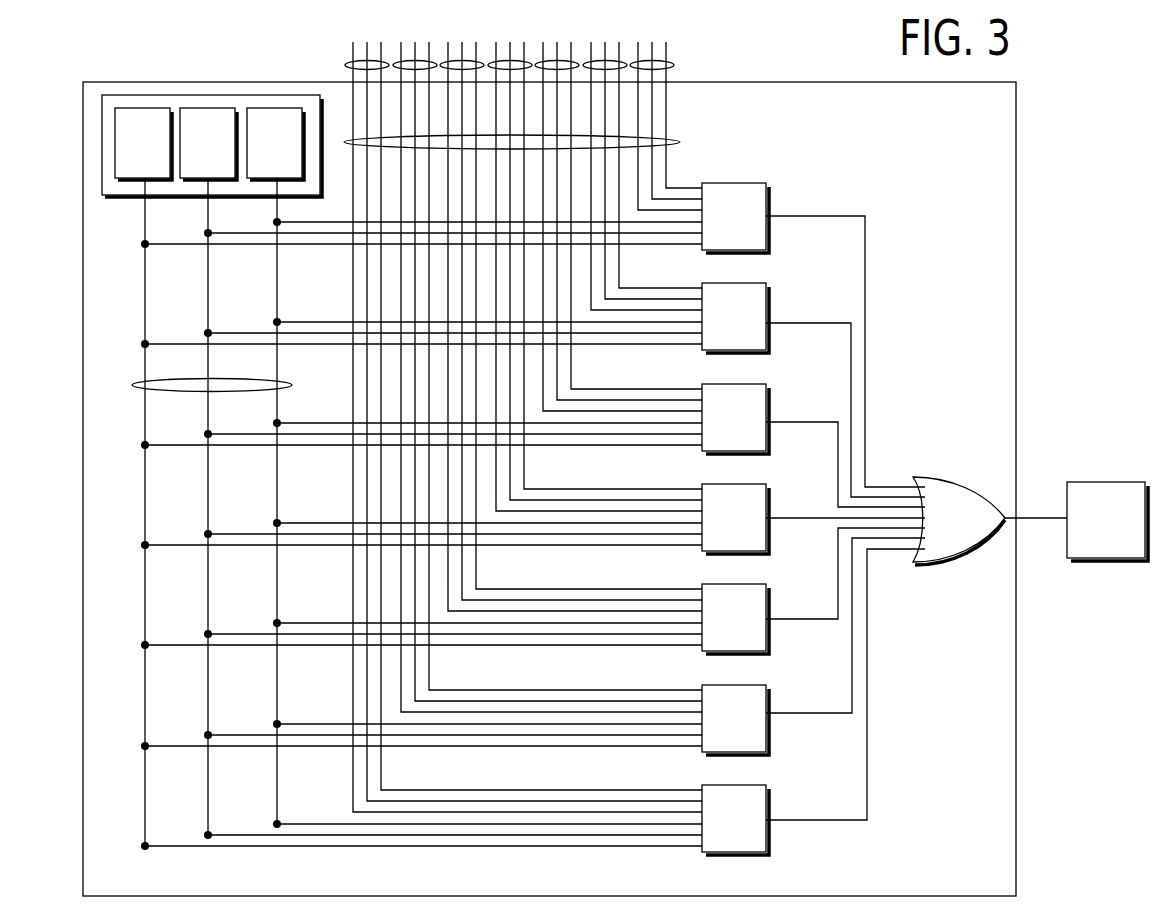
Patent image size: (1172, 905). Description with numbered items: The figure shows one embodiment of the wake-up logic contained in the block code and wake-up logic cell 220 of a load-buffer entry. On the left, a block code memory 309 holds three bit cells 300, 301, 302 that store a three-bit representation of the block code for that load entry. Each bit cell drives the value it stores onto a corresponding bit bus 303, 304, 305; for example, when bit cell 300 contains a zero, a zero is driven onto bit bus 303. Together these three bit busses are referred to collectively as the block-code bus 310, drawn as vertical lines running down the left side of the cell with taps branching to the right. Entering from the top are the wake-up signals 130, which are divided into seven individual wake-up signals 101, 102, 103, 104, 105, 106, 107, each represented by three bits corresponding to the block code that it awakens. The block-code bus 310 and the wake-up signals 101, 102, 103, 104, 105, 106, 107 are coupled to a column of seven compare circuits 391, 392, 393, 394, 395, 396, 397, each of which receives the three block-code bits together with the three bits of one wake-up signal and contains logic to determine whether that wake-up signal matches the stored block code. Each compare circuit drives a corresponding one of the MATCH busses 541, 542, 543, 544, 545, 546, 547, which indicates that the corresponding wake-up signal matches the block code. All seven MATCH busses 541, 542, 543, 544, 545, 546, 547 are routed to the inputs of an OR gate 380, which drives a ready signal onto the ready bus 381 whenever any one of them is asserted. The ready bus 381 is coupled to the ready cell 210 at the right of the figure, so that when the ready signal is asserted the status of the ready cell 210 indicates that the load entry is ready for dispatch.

The wake-up signal 101 is at (668, 67).
The wake-up signal 102 is at (622, 60).
The wake-up signal 103 is at (574, 60).
The wake-up signal 104 is at (526, 60).
The wake-up signal 105 is at (478, 60).
The wake-up signal 106 is at (429, 60).
The wake-up signal 107 is at (381, 60).
The wake-up signals 130 is at (678, 142).
The ready cell 210 is at (1088, 547).
The block code and wake-up logic cell 220 is at (1017, 742).
The bit cell 300 is at (257, 170).
The bit cell 301 is at (190, 170).
The bit cell 302 is at (125, 170).
The bit bus 303 is at (280, 303).
The bit bus 304 is at (210, 303).
The bit bus 305 is at (148, 303).
The block code memory 309 is at (144, 95).
The block-code bus 310 is at (132, 385).
The OR gate 380 is at (941, 531).
The ready bus 381 is at (1049, 522).
The compare circuit 391 is at (717, 231).
The compare circuit 392 is at (717, 331).
The compare circuit 393 is at (717, 432).
The compare circuit 394 is at (717, 532).
The compare circuit 395 is at (717, 632).
The compare circuit 396 is at (717, 733).
The compare circuit 397 is at (717, 833).
The MATCH bus 541 is at (818, 218).
The MATCH bus 542 is at (818, 325).
The MATCH bus 543 is at (818, 424).
The MATCH bus 544 is at (818, 520).
The MATCH bus 545 is at (818, 621).
The MATCH bus 546 is at (818, 715).
The MATCH bus 547 is at (818, 822).